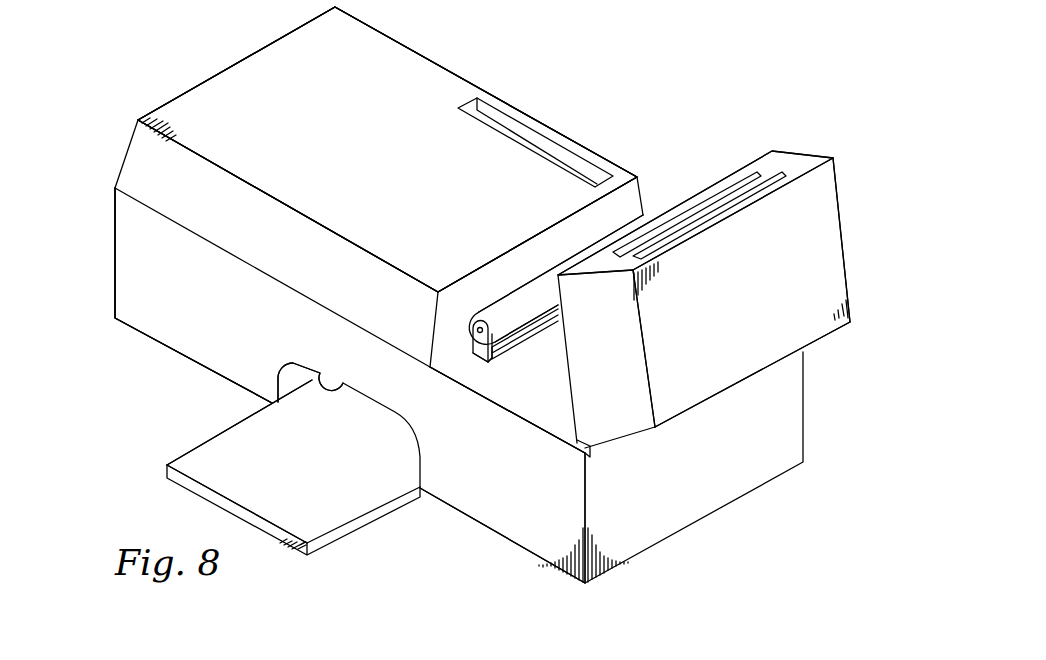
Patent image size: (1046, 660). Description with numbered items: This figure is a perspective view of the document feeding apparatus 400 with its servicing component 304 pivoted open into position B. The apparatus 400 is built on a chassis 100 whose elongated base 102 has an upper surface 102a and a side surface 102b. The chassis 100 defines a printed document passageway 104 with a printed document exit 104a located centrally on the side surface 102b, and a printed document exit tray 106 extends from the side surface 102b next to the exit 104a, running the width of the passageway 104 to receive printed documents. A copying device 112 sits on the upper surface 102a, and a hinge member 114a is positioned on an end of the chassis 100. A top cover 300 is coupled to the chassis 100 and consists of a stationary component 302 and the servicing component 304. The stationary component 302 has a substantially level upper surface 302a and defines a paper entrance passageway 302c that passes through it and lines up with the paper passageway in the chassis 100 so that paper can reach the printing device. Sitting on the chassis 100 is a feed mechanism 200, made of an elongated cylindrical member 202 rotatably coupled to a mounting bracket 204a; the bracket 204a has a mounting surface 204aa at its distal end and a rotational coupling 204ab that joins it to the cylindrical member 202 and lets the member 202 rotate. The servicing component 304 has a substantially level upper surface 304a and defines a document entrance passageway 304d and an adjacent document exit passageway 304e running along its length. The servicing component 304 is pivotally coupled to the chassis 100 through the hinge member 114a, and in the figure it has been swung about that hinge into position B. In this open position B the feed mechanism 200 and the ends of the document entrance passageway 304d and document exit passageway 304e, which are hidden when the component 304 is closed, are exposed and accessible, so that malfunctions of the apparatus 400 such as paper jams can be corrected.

The chassis 100 is at (122, 413).
The elongated base 102 is at (677, 508).
The upper surface 102a is at (548, 424).
The side surface 102b is at (122, 255).
The printed document passageway 104 is at (375, 418).
The printed document exit 104a is at (332, 375).
The printed document exit tray 106 is at (212, 447).
The copying device 112 is at (520, 352).
The hinge member 114a is at (577, 455).
The feed mechanism 200 is at (567, 237).
The elongated cylindrical member 202 is at (533, 292).
The mounting bracket 204a is at (478, 343).
The mounting surface 204aa is at (480, 362).
The rotational coupling 204ab is at (478, 330).
The top cover 300 is at (100, 142).
The stationary component 302 is at (427, 57).
The upper surface 302a is at (245, 70).
The paper entrance passageway 302c is at (534, 137).
The servicing component 304 is at (783, 142).
The upper surface 304a is at (832, 243).
The document entrance passageway 304d is at (698, 218).
The document exit passageway 304e is at (737, 185).
The document feeding apparatus 400 is at (612, 95).
The position B is at (822, 96).